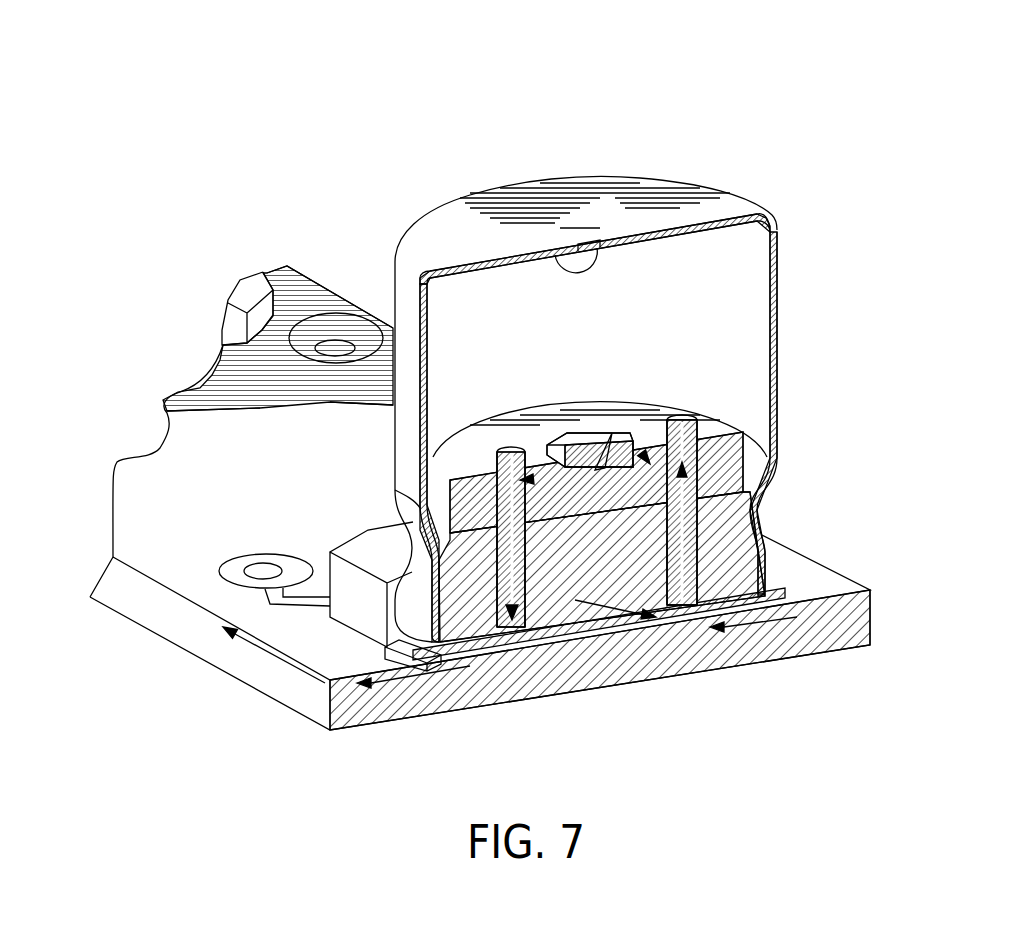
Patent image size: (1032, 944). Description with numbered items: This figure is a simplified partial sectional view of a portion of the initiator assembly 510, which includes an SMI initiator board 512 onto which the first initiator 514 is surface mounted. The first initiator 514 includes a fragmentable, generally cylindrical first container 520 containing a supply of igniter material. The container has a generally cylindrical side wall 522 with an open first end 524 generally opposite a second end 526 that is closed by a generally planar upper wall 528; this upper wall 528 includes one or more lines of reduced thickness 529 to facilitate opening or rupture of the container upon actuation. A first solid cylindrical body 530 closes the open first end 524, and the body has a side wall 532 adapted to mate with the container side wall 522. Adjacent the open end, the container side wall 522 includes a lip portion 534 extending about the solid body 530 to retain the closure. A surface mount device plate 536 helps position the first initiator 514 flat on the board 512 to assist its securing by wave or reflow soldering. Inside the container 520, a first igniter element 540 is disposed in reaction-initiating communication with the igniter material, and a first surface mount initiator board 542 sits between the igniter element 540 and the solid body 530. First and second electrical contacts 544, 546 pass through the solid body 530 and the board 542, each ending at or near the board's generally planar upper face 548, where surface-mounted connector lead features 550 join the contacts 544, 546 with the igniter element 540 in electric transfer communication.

The initiator assembly 510 is at (363, 170).
The SMI initiator board 512 is at (311, 262).
The first initiator 514 is at (882, 293).
The first container 520 is at (648, 372).
The side wall 522 is at (779, 370).
The open first end 524 is at (513, 630).
The second end 526 is at (462, 235).
The upper wall 528 is at (702, 200).
The lines of reduced thickness 529 is at (553, 250).
The first solid cylindrical body 530 is at (755, 660).
The side wall 532 is at (760, 518).
The lip portion 534 is at (433, 647).
The surface mount device plate 536 is at (373, 537).
The first igniter element 540 is at (597, 437).
The first surface mount initiator board 542 is at (750, 462).
The first electrical contact 544 is at (673, 620).
The second electrical contact 546 is at (528, 600).
The upper face 548 is at (612, 430).
The connector lead features 550 is at (526, 476).